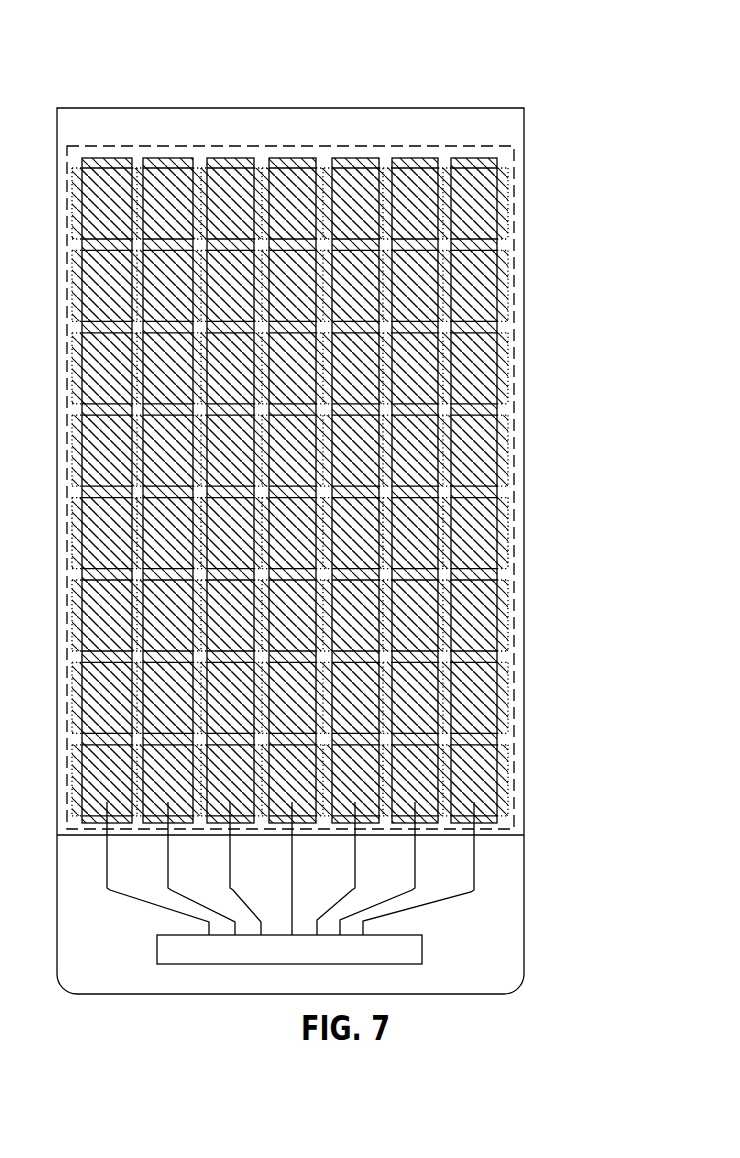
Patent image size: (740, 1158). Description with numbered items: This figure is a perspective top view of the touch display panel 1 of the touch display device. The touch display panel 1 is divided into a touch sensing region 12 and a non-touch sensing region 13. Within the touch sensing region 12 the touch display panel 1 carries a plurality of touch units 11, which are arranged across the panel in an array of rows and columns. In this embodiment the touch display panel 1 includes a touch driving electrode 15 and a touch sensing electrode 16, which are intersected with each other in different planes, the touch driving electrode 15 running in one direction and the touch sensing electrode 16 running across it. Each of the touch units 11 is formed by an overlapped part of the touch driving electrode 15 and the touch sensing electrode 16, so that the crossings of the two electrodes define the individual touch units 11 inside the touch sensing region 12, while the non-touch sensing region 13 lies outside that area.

The touch display panel 1 is at (524, 148).
The touch units 11 is at (478, 772).
The touch sensing region 12 is at (513, 232).
The non-touch sensing region 13 is at (502, 958).
The touch driving electrode 15 is at (357, 170).
The touch sensing electrode 16 is at (258, 172).